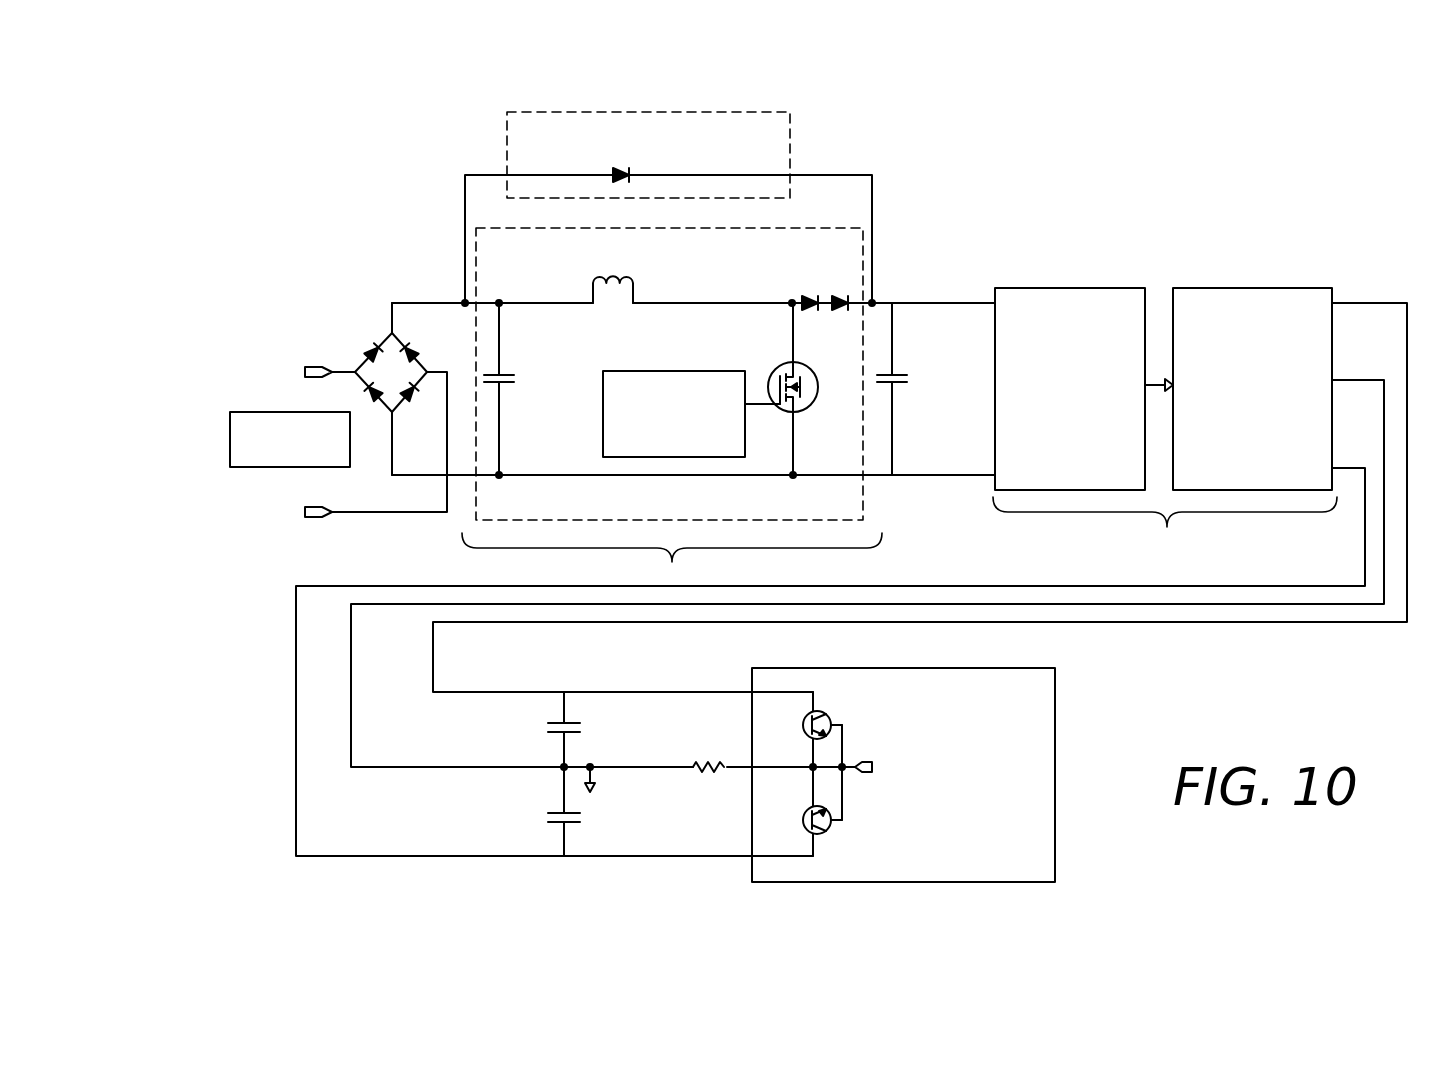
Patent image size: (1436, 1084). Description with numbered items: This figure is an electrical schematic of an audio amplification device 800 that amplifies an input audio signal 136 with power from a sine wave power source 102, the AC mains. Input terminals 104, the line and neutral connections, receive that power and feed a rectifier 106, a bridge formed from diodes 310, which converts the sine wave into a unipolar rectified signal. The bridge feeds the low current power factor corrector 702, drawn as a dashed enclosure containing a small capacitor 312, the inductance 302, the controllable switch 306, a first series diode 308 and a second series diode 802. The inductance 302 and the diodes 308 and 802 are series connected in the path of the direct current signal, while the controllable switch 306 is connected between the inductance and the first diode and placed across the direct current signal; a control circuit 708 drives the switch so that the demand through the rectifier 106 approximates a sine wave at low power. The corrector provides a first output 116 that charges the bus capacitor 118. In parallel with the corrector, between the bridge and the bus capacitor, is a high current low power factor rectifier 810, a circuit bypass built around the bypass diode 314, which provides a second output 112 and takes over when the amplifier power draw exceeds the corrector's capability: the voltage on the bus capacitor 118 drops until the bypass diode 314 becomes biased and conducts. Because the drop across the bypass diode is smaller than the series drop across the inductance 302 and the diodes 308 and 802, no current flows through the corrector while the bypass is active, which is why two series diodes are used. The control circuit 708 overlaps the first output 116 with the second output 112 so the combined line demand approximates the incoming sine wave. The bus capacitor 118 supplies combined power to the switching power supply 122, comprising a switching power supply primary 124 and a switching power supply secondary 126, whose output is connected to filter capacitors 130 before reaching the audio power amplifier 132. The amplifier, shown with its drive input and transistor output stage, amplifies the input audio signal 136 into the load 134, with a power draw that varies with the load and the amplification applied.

The sine wave power source 102 is at (265, 412).
The input terminals 104 is at (321, 338).
The rectifier 106 is at (365, 342).
The second output 112 is at (872, 183).
The first output 116 is at (853, 303).
The bus capacitor 118 is at (926, 384).
The switching power supply 122 is at (1165, 405).
The switching power supply primary 124 is at (1085, 288).
The switching power supply secondary 126 is at (1222, 288).
The filter capacitors 130 is at (582, 720).
The audio power amplifier 132 is at (786, 668).
The load 134 is at (727, 785).
The input audio signal 136 is at (862, 752).
The inductance L1 302 is at (612, 300).
The controllable switch Q3 306 is at (793, 363).
The diode D2 308 is at (836, 297).
The diodes 310 is at (369, 400).
The C_SMALL 312 is at (533, 384).
The diode D_Bypass 314 is at (612, 172).
The power factor corrector 702 is at (835, 228).
The control circuit 708 is at (603, 440).
The audio amplification device 800 is at (1073, 176).
The diode D3 802 is at (806, 297).
The high current low power factor rectifier 810 is at (790, 140).